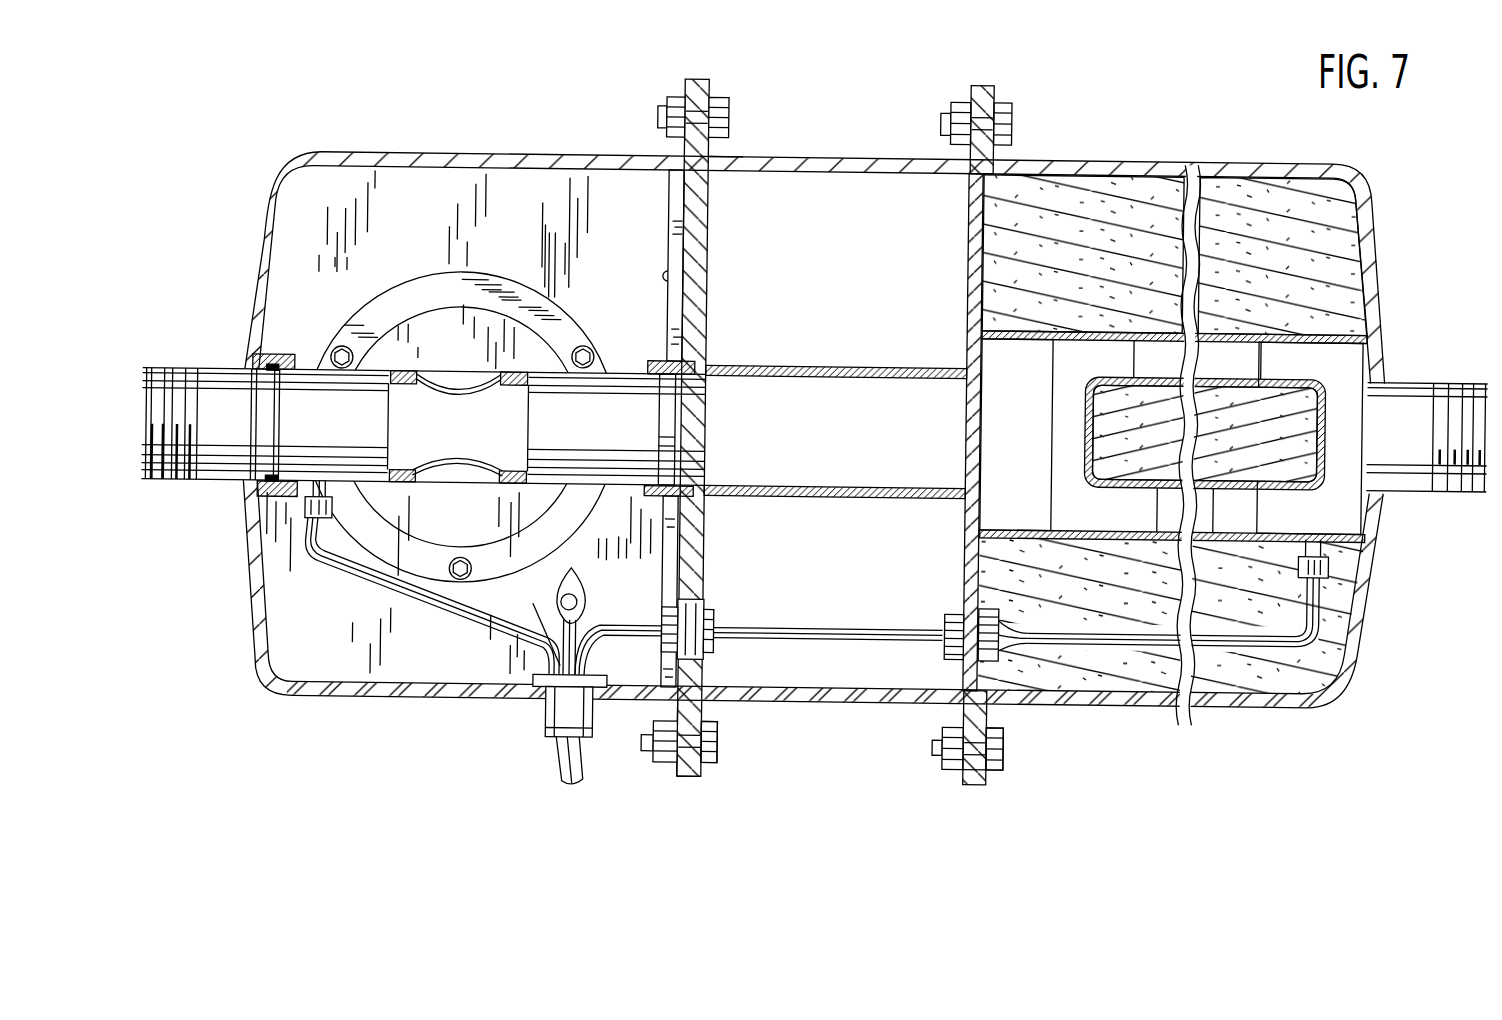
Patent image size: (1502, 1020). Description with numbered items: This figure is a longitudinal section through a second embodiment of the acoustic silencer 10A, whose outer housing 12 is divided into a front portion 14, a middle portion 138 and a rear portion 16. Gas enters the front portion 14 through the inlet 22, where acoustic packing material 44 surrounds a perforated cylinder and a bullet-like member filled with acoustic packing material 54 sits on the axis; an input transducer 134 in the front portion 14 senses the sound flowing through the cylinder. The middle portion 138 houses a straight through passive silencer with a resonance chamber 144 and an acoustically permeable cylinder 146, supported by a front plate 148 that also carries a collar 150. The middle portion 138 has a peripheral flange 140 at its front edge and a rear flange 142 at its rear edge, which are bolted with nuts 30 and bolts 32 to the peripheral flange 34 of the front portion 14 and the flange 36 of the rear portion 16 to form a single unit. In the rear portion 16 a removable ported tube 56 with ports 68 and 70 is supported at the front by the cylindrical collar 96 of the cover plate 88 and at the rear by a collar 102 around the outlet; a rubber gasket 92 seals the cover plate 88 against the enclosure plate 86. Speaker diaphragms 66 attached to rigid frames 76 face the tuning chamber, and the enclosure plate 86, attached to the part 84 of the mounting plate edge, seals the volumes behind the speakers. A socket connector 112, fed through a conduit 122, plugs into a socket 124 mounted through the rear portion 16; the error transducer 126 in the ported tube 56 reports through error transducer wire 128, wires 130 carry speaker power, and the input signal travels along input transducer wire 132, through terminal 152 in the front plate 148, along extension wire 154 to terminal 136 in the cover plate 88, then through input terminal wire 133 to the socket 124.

The acoustic silencer 10A is at (845, 82).
The outer housing 12 is at (573, 157).
The front portion 14 is at (1117, 157).
The rear portion 16 is at (389, 158).
The inlet 22 is at (1409, 377).
The nuts 30 is at (668, 764).
The bolts 32 is at (721, 742).
The peripheral flange 34 is at (979, 779).
The flange 36 is at (693, 780).
The acoustic packing material 44 is at (1296, 257).
The acoustic packing material 54 is at (1250, 435).
The ported tube 56 is at (624, 387).
The diaphragm 66 is at (476, 518).
The port 68 is at (457, 427).
The port 70 is at (460, 389).
The rigid frame 76 is at (577, 532).
The part of the peripheral edge 84 is at (664, 277).
The enclosure plate 86 is at (665, 242).
The cover plate 88 is at (704, 265).
The rubber gasket 92 is at (700, 222).
The cylindrical collar 96 is at (658, 362).
The collar 102 is at (274, 365).
The socket connector 112 is at (544, 720).
The conduit 122 is at (577, 772).
The socket 124 is at (584, 718).
The error transducer 126 is at (312, 523).
The error transducer wire 128 is at (483, 634).
The wires 130 is at (574, 580).
The input transducer wire 132 is at (1117, 643).
The input terminal wire 133 is at (632, 630).
The input transducer 134 is at (1300, 562).
The terminal 136 is at (692, 615).
The middle portion 138 is at (780, 158).
The peripheral flange 140 is at (975, 781).
The rear flange 142 is at (709, 778).
The resonance chamber 144 is at (865, 286).
The acoustically permeable cylinder 146 is at (823, 365).
The front plate 148 is at (966, 288).
The collar 150 is at (1013, 342).
The terminal 152 is at (1003, 645).
The extension wire 154 is at (832, 627).